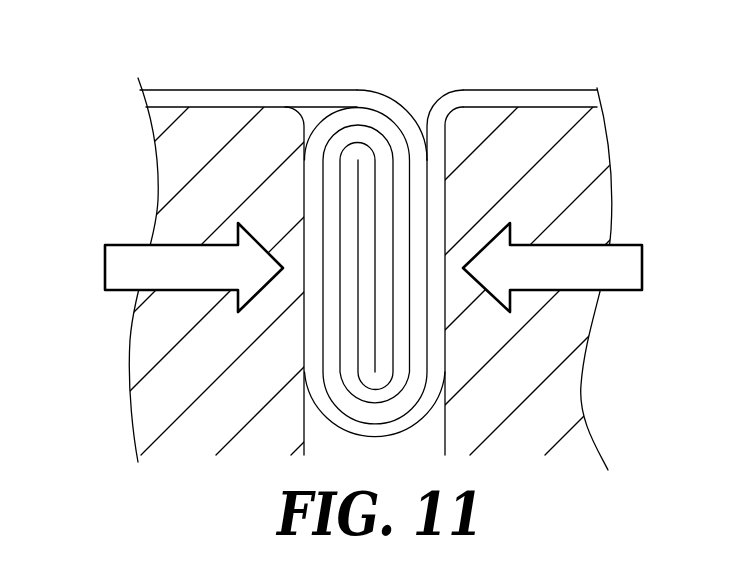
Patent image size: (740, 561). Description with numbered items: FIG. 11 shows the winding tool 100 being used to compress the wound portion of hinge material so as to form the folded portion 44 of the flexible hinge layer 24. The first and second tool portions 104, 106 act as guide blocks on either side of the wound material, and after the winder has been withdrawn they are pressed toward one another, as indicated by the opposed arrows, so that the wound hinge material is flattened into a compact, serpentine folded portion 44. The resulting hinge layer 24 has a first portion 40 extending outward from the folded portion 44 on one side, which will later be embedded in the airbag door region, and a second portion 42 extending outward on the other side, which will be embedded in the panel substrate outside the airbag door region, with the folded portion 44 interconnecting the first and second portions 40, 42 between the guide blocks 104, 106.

The winding tool 100 is at (98, 143).
The flexible hinge layer 24 is at (156, 87).
The first tool portion 104 is at (201, 117).
The first portion 40 is at (258, 100).
The third portion 44 is at (333, 137).
The second portion 42 is at (525, 98).
The second tool portion 106 is at (578, 113).